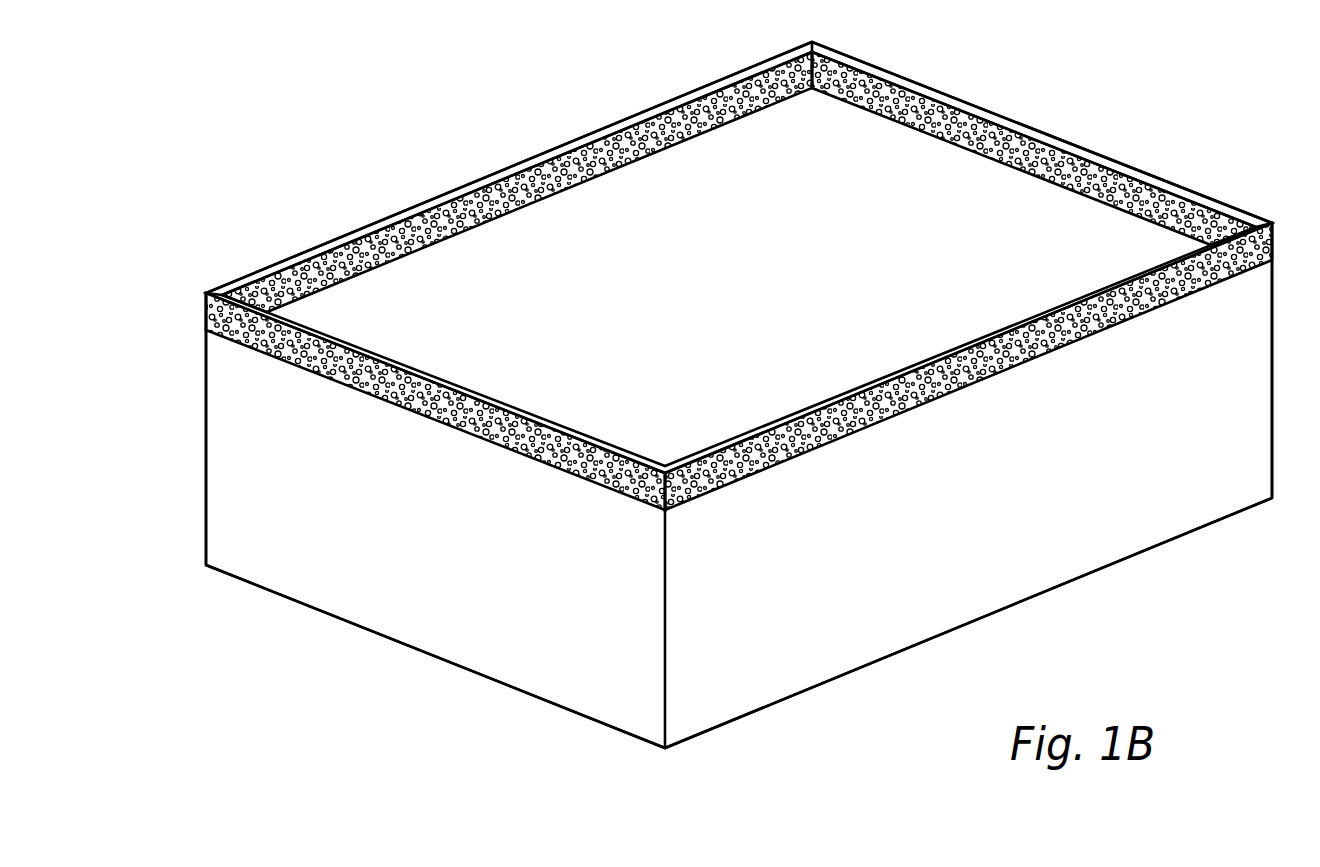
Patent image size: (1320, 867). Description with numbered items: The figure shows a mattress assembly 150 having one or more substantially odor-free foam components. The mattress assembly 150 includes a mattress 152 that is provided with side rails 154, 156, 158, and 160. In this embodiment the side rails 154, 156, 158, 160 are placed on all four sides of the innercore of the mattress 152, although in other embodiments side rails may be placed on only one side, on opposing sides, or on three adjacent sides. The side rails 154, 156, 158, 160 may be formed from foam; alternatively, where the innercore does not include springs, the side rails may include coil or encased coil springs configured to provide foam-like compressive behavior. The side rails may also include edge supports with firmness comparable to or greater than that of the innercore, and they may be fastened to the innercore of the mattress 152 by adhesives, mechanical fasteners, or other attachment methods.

The mattress assembly 150 is at (322, 122).
The mattress 152 is at (455, 585).
The side rail 154 is at (285, 352).
The side rail 156 is at (936, 360).
The side rail 158 is at (988, 112).
The side rail 160 is at (673, 108).